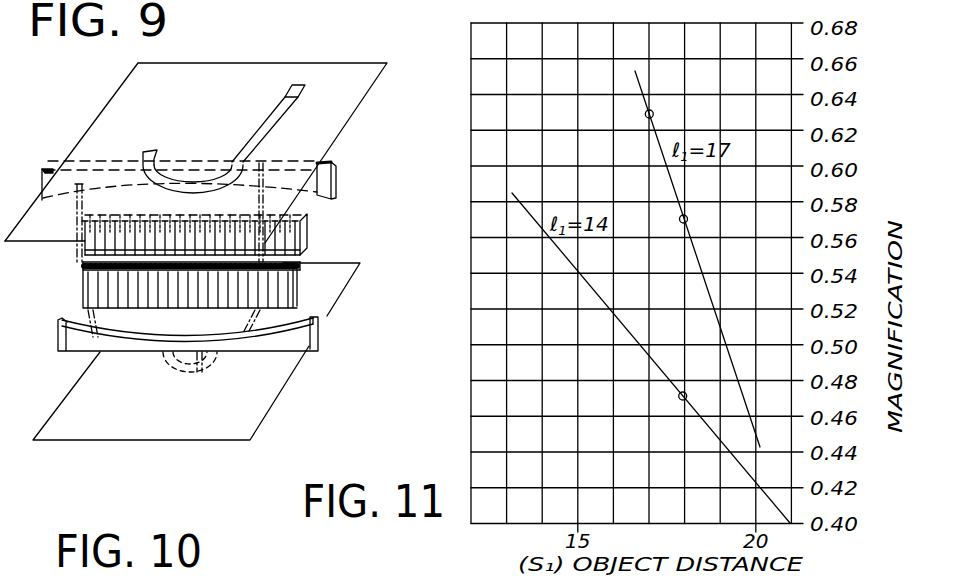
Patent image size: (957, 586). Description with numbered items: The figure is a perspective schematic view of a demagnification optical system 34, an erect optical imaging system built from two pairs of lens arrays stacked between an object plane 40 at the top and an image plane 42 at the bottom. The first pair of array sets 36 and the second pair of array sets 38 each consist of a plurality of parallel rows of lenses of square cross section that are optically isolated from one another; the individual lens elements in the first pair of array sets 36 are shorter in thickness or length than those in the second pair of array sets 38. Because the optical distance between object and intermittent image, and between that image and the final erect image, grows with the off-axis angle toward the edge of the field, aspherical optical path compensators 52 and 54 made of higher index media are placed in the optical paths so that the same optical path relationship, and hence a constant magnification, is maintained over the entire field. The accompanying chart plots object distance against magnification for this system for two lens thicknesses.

In FIG. 9, the demagnification optical system 34 is at (351, 192).
In FIG. 9, the first pair of array sets 36 is at (307, 229).
In FIG. 9, the second pair of array sets 38 is at (305, 283).
In FIG. 9, the object plane 40 is at (338, 72).
In FIG. 11, the object plane 40 is at (452, 584).
In FIG. 9, the image plane 42 is at (90, 428).
In FIG. 9, the aspherical optical path compensator 52 is at (334, 172).
In FIG. 9, the aspherical optical path compensator 54 is at (319, 333).